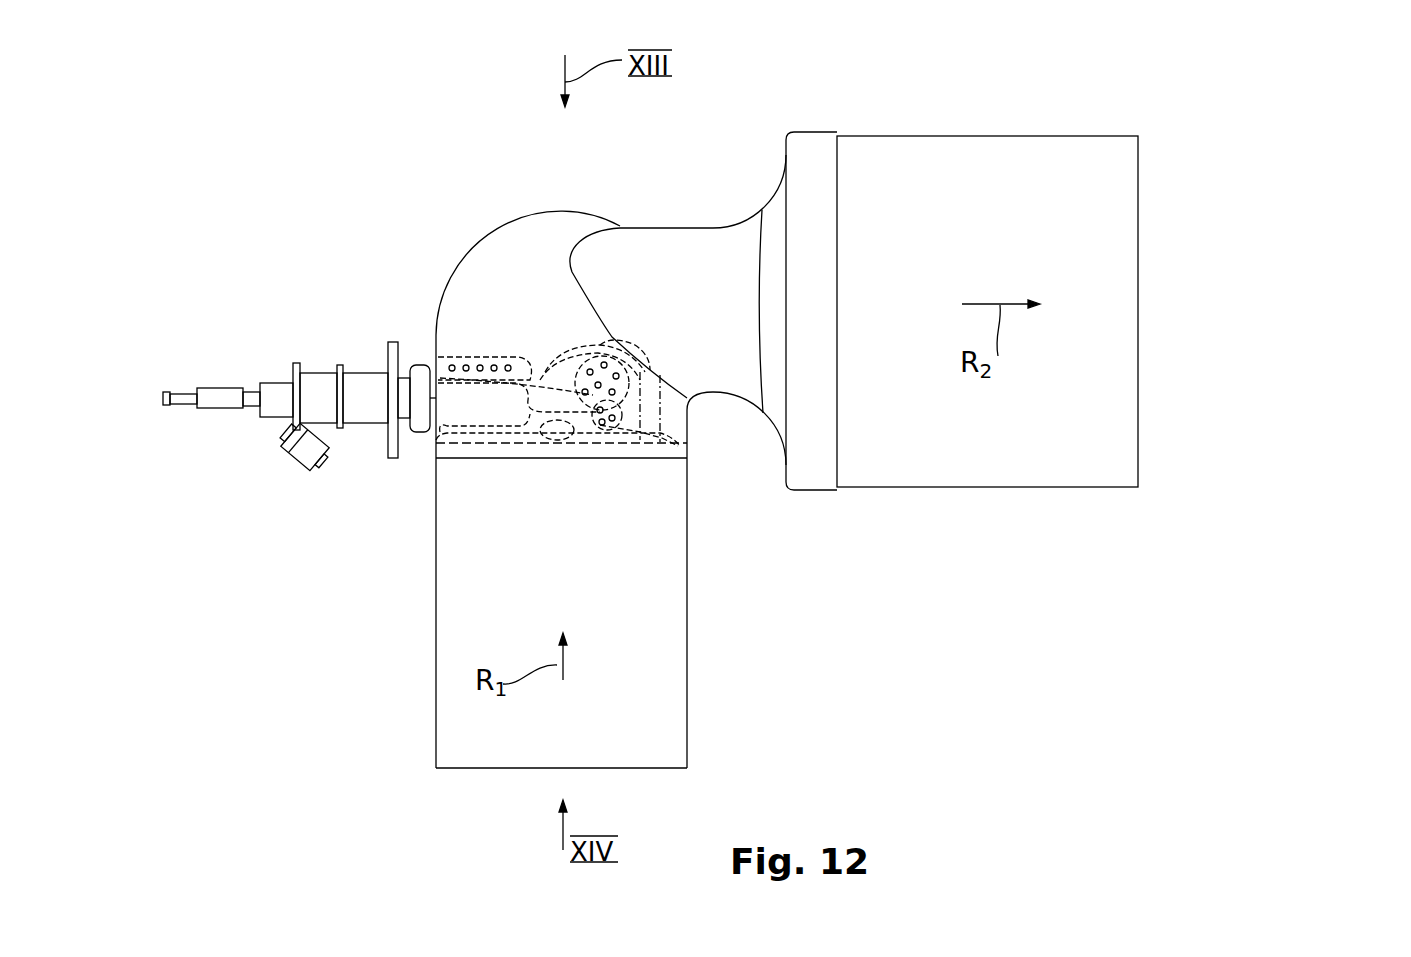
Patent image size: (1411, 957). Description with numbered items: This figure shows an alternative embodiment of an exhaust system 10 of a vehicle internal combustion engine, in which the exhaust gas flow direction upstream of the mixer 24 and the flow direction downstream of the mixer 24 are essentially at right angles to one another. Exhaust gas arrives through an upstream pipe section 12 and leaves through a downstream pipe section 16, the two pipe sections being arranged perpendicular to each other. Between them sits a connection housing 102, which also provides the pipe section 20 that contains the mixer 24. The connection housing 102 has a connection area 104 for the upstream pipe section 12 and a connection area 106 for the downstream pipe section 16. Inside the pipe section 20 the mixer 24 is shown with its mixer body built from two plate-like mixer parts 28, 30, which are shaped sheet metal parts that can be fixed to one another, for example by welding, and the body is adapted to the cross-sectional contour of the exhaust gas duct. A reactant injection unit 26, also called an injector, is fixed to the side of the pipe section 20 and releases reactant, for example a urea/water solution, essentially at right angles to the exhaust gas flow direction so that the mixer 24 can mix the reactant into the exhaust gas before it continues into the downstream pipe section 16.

The exhaust system 10 is at (1300, 138).
The upstream pipe section 12 is at (688, 638).
The downstream pipe section 16 is at (1018, 136).
The pipe section 20 is at (432, 440).
The mixer 24 is at (505, 332).
The reactant injection unit 26 is at (231, 466).
The plate-like mixer part 28 is at (503, 445).
The plate-like mixer part 30 is at (568, 352).
The connection housing 102 is at (622, 228).
The connection area 104 is at (708, 475).
The connection area 106 is at (822, 104).